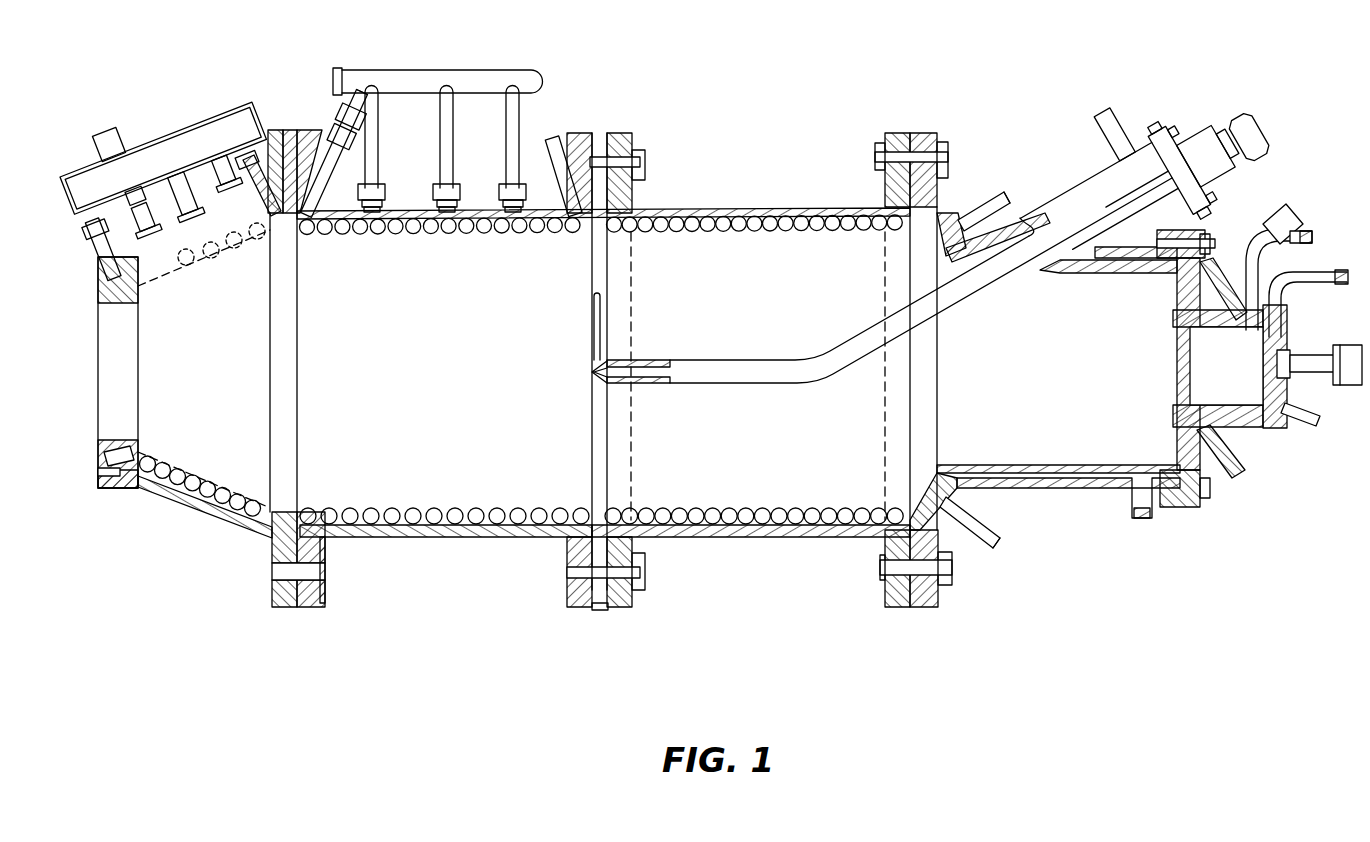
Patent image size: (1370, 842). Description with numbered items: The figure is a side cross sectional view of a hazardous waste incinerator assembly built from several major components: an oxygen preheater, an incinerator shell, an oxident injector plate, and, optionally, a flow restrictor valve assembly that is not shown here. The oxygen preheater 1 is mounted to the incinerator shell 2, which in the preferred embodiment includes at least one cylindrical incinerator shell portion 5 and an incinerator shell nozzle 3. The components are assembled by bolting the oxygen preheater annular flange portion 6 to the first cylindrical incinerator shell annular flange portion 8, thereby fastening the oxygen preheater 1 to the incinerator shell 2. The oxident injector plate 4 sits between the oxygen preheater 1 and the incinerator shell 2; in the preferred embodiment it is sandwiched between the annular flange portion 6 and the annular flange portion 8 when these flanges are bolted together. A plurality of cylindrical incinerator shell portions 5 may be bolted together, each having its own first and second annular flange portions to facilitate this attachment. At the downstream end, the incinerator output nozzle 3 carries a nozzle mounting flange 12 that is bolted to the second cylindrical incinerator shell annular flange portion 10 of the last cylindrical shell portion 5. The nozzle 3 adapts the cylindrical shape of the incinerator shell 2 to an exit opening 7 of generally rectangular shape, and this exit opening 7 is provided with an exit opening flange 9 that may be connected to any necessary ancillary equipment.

The oxygen preheater 1 is at (903, 617).
The incinerator shell 2 is at (465, 575).
The incinerator shell nozzle 3 is at (190, 522).
The oxident injector plate 4 is at (607, 258).
The cylindrical incinerator shell portion 5 is at (412, 552).
The oxygen preheater annular flange portion 6 is at (625, 608).
The exit opening 7 is at (98, 433).
The first cylindrical incinerator shell annular flange portion 8 is at (568, 607).
The exit opening flange 9 is at (118, 490).
The second cylindrical incinerator shell annular flange portion 10 is at (320, 607).
The nozzle mounting flange 12 is at (282, 607).